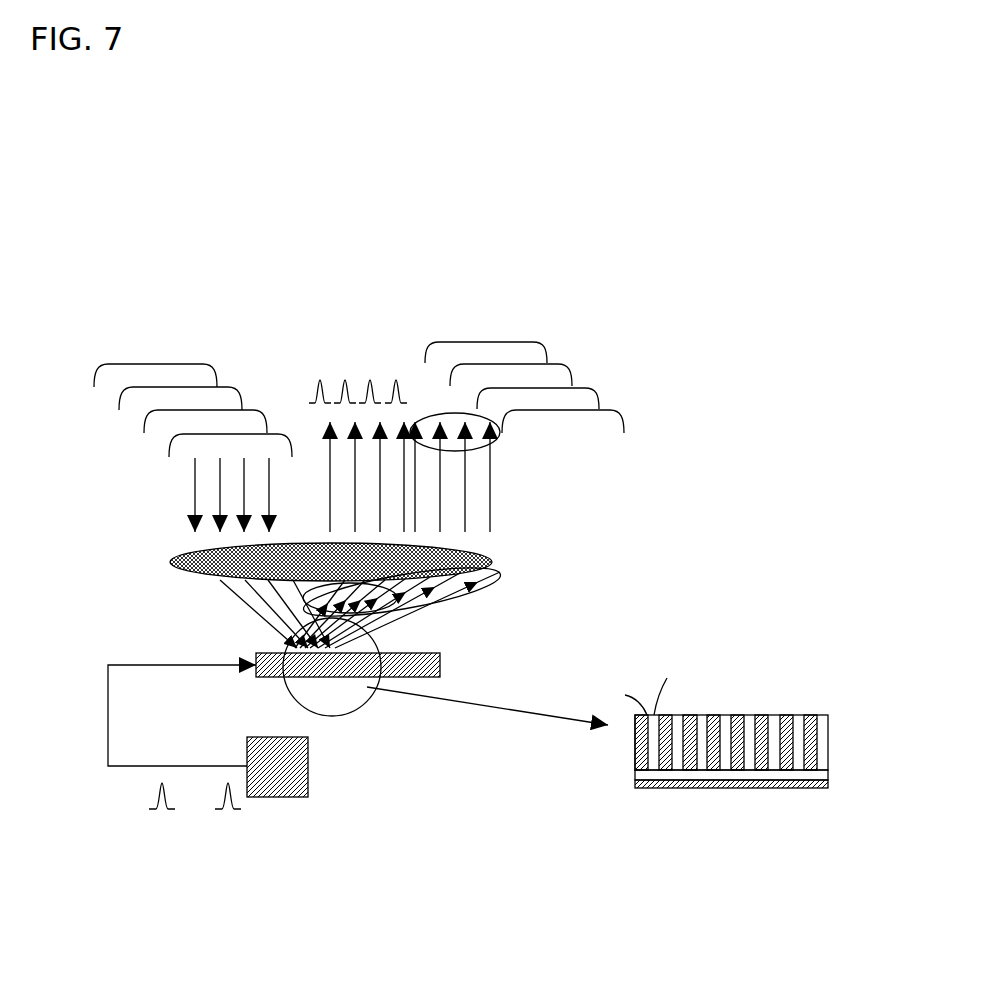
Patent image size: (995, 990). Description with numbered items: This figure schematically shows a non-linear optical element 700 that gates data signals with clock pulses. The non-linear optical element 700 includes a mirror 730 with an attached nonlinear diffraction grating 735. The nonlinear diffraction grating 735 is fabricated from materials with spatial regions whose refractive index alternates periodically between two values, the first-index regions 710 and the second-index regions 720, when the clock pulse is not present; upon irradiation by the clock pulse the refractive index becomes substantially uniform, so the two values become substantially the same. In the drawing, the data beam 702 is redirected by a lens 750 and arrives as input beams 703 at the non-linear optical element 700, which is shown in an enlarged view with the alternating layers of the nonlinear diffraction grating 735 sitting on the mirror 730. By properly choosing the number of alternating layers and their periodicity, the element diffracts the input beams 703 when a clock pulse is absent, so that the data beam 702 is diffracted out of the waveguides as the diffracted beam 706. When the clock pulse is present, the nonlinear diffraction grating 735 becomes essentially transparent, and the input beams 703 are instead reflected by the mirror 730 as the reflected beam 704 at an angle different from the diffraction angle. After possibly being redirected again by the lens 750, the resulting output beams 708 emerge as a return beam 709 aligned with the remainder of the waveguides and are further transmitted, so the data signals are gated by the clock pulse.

The non-linear optical element 700 is at (460, 662).
The data beam 702 is at (182, 488).
The input beams 703 is at (265, 625).
The reflected beam 704 is at (307, 607).
The diffracted beam 706 is at (500, 582).
The output beams 708 is at (358, 374).
The output beam 709 is at (495, 445).
The refractive index n1 regions 710 is at (646, 715).
The refractive index n2 regions 720 is at (728, 760).
The mirror 730 is at (830, 775).
The nonlinear diffraction grating 735 is at (717, 742).
The lens 750 is at (488, 562).